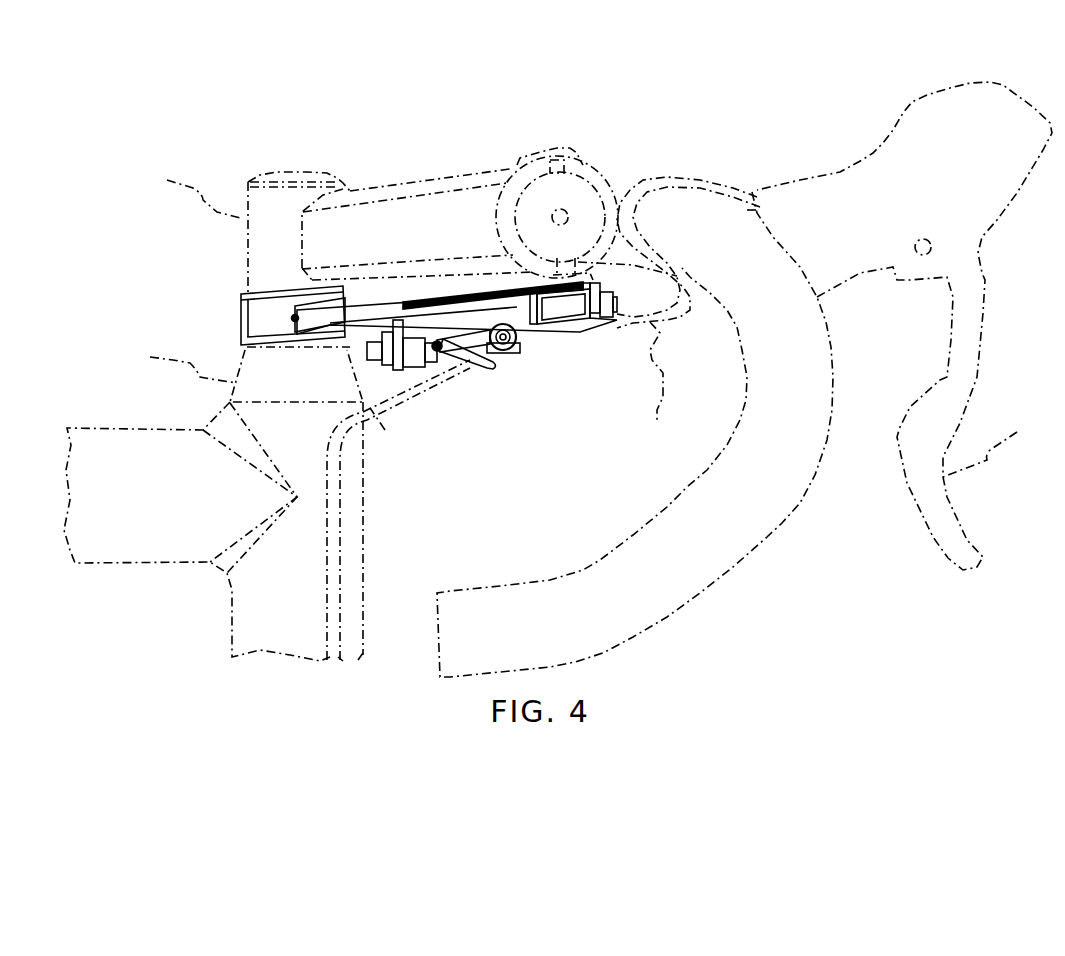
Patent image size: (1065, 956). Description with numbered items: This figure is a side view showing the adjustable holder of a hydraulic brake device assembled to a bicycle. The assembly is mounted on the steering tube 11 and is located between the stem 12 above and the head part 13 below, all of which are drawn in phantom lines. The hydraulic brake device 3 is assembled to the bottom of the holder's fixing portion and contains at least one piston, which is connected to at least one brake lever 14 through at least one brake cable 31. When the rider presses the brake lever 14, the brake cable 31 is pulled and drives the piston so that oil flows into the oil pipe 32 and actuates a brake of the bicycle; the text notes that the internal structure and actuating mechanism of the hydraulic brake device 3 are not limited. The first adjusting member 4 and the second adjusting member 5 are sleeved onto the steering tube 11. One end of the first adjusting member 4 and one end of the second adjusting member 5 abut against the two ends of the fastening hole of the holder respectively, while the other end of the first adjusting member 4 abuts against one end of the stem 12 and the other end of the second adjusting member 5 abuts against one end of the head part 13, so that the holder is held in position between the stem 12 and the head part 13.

The hydraulic brake device 3 is at (525, 318).
The first adjusting member 4 is at (250, 290).
The second adjusting member 5 is at (240, 350).
The steering tube 11 is at (398, 510).
The stem 12 is at (243, 228).
The head part 13 is at (242, 372).
The brake lever 14 is at (904, 326).
The brake cable 31 is at (635, 427).
The oil pipe 32 is at (432, 387).